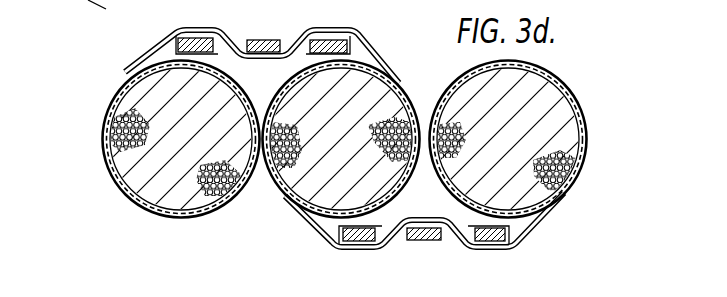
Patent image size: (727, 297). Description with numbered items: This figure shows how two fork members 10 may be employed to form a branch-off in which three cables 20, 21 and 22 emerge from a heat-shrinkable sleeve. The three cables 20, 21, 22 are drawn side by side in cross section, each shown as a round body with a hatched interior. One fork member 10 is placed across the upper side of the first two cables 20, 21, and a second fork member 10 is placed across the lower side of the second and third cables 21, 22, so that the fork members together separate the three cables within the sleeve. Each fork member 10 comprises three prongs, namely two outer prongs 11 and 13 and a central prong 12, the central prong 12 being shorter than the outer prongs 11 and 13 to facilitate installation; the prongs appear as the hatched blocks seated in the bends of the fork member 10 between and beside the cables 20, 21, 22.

The fork member 10 is at (268, 38).
The outer prong 11 is at (341, 230).
The central prong 12 is at (410, 220).
The outer prong 13 is at (508, 236).
The cable 20 is at (170, 176).
The cable 21 is at (307, 172).
The cable 22 is at (525, 190).